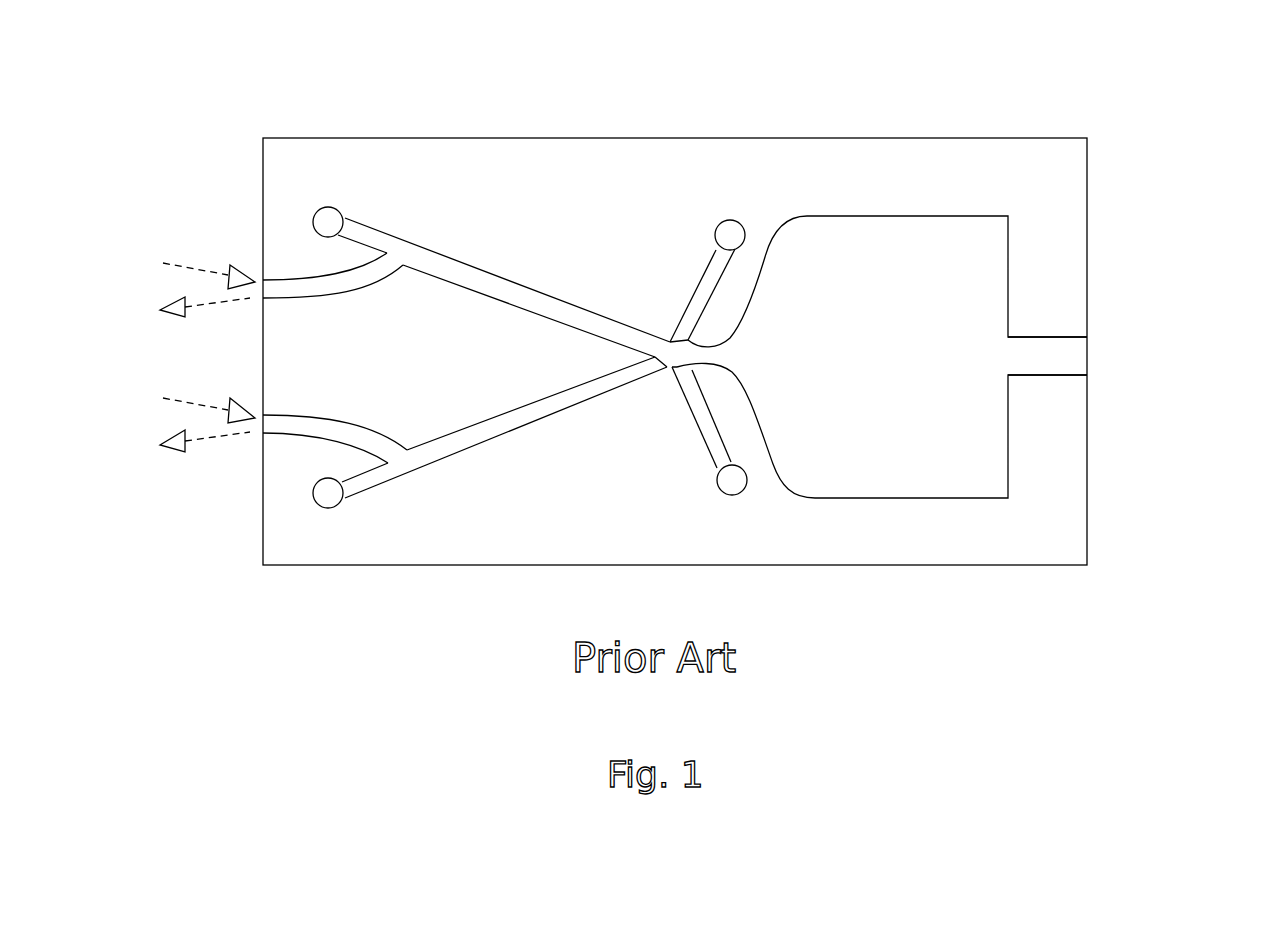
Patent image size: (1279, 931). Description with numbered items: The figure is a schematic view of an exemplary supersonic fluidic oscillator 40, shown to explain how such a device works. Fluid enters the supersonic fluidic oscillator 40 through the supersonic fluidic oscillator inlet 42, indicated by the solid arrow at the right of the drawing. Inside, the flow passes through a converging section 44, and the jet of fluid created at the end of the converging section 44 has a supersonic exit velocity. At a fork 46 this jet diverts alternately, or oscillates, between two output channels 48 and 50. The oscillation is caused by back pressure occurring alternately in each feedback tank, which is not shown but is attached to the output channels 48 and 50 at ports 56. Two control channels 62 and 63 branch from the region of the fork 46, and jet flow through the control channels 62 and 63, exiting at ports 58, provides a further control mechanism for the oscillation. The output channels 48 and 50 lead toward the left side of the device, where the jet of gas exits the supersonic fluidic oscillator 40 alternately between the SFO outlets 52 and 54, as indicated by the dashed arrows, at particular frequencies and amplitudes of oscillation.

The supersonic fluidic oscillator 40 is at (1132, 119).
The supersonic fluidic oscillator inlet 42 is at (1243, 360).
The converging section 44 is at (778, 287).
The fork 46 is at (671, 353).
The output channel 48 is at (538, 305).
The output channel 50 is at (535, 413).
The SFO outlet 52 is at (262, 287).
The SFO outlet 54 is at (265, 426).
The ports 56 is at (328, 222).
The ports 58 is at (730, 235).
The control channel 62 is at (697, 297).
The control channel 63 is at (708, 423).